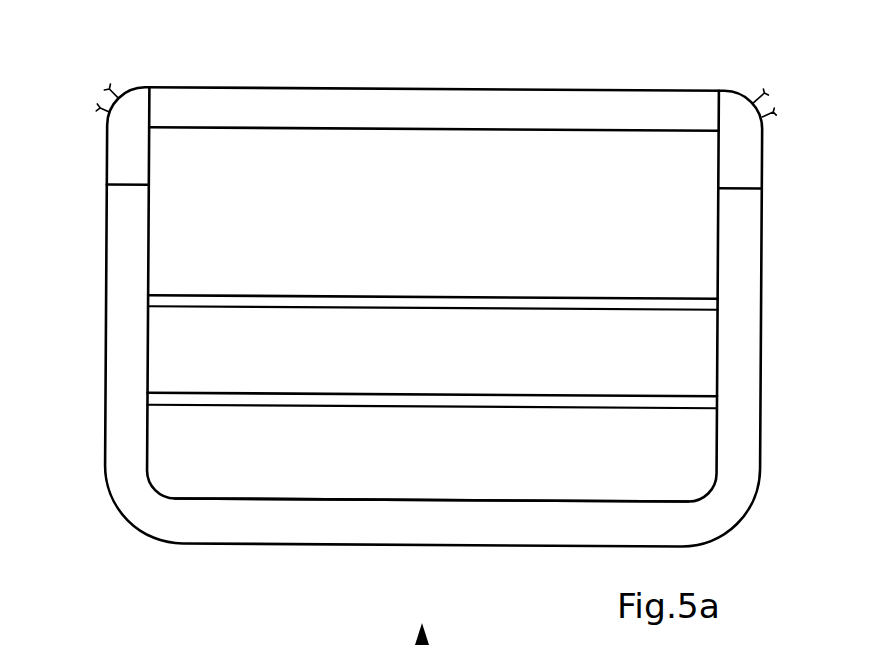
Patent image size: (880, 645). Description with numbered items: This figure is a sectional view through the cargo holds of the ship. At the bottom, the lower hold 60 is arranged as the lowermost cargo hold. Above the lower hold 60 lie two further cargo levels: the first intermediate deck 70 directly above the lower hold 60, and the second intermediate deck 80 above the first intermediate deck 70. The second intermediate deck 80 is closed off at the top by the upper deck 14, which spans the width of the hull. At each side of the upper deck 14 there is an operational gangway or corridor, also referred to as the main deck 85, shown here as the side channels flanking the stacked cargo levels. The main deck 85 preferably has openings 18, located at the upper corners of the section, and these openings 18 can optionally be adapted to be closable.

The upper deck 14 is at (445, 102).
The openings 18 is at (105, 97).
The operational gangway 85 is at (122, 151).
The second intermediate deck 80 is at (433, 251).
The first intermediate deck 70 is at (432, 373).
The lower hold 60 is at (432, 473).